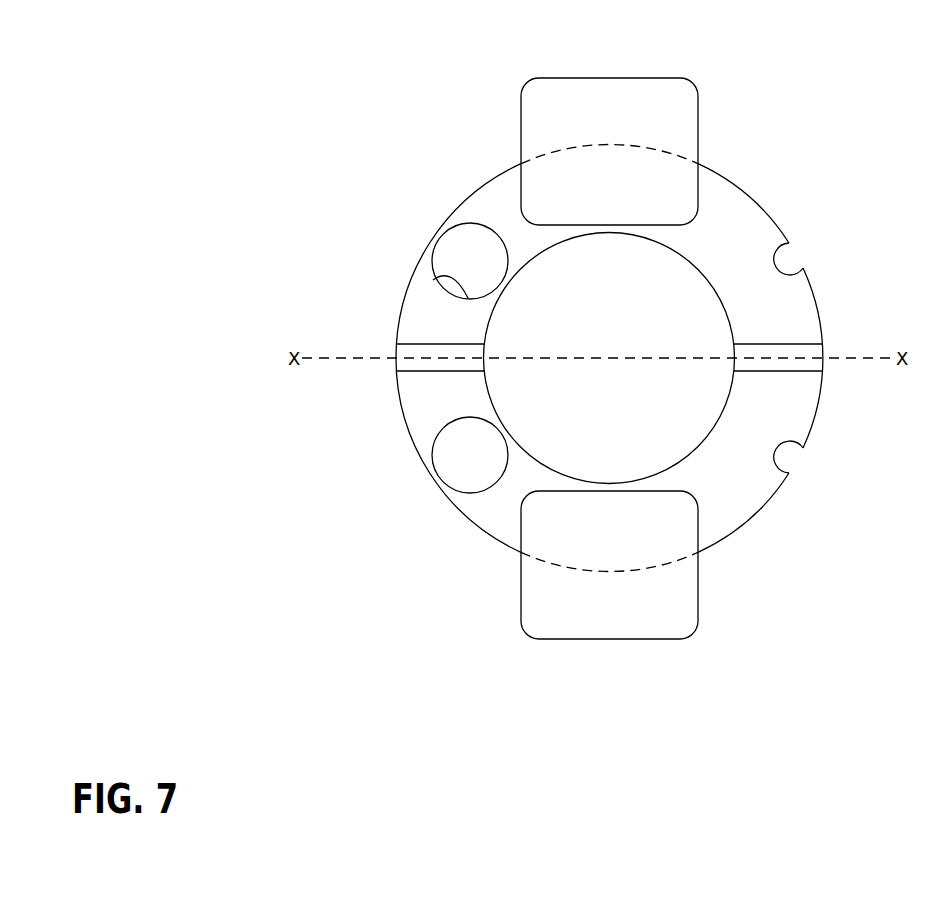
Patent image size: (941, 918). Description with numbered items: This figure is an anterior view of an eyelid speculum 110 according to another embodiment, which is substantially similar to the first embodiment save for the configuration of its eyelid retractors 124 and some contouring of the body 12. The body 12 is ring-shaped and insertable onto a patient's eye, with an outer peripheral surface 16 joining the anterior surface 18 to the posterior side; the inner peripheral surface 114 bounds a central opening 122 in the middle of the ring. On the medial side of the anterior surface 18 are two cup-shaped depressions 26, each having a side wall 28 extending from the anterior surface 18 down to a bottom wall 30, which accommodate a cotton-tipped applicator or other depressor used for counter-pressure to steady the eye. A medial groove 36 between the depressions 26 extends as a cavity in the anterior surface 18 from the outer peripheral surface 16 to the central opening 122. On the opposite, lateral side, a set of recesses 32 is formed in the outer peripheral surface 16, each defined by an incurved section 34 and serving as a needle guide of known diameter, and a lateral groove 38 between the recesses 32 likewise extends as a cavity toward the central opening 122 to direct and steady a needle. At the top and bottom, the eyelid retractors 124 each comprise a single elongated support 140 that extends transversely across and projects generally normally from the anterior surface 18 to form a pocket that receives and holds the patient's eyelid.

The eyelid speculum 110 is at (345, 79).
The body 12 is at (481, 180).
The outer peripheral surface 16 is at (462, 513).
The anterior surface 18 is at (503, 513).
The depressions 26 is at (430, 264).
The side wall 28 is at (437, 280).
The bottom wall 30 is at (462, 252).
The recesses 32 is at (799, 240).
The incurved section 34 is at (800, 262).
The medial groove 36 is at (430, 358).
The lateral groove 38 is at (803, 357).
The central opening 114 is at (717, 297).
The central region 122 is at (624, 390).
The eyelid retractors 124 is at (704, 109).
The elongated support 140 is at (588, 105).